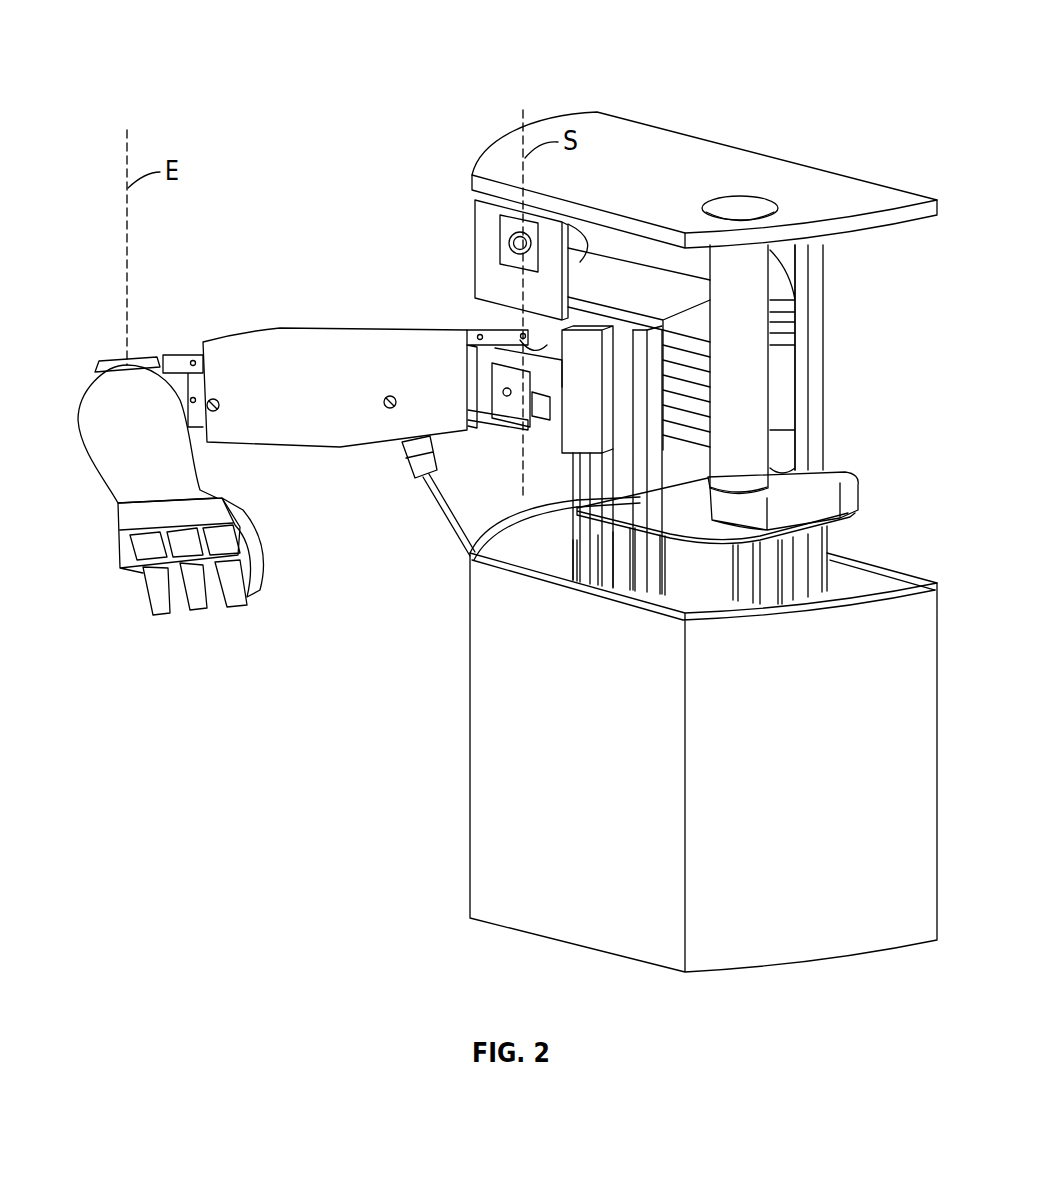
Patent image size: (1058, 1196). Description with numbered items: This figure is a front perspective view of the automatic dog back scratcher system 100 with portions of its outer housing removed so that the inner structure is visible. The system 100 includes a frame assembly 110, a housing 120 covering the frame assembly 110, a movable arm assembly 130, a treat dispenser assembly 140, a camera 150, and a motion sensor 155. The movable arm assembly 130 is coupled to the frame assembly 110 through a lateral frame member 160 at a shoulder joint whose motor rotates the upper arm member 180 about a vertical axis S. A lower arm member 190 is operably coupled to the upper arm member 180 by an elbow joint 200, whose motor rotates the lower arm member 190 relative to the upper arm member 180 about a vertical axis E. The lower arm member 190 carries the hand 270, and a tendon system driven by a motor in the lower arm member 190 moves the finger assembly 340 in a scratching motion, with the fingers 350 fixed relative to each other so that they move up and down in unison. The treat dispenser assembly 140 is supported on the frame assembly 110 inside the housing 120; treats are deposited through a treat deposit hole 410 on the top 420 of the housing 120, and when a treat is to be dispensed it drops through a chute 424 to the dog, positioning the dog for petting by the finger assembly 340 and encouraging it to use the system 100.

The system 100 is at (837, 42).
The frame assembly 110 is at (842, 278).
The housing 120 is at (466, 740).
The movable arm assembly 130 is at (197, 347).
The treat dispenser assembly 140 is at (845, 410).
The camera 150 is at (500, 272).
The motion sensor 155 is at (504, 240).
The lateral frame member 160 is at (545, 437).
The upper arm member 180 is at (380, 322).
The lower arm member 190 is at (198, 455).
The elbow joint 200 is at (108, 355).
The hand 270 is at (262, 545).
The finger assembly 340 is at (135, 578).
The fingers 350 is at (190, 615).
The treat deposit hole 410 is at (748, 206).
The top of the housing 420 is at (684, 178).
The chute 424 is at (857, 580).